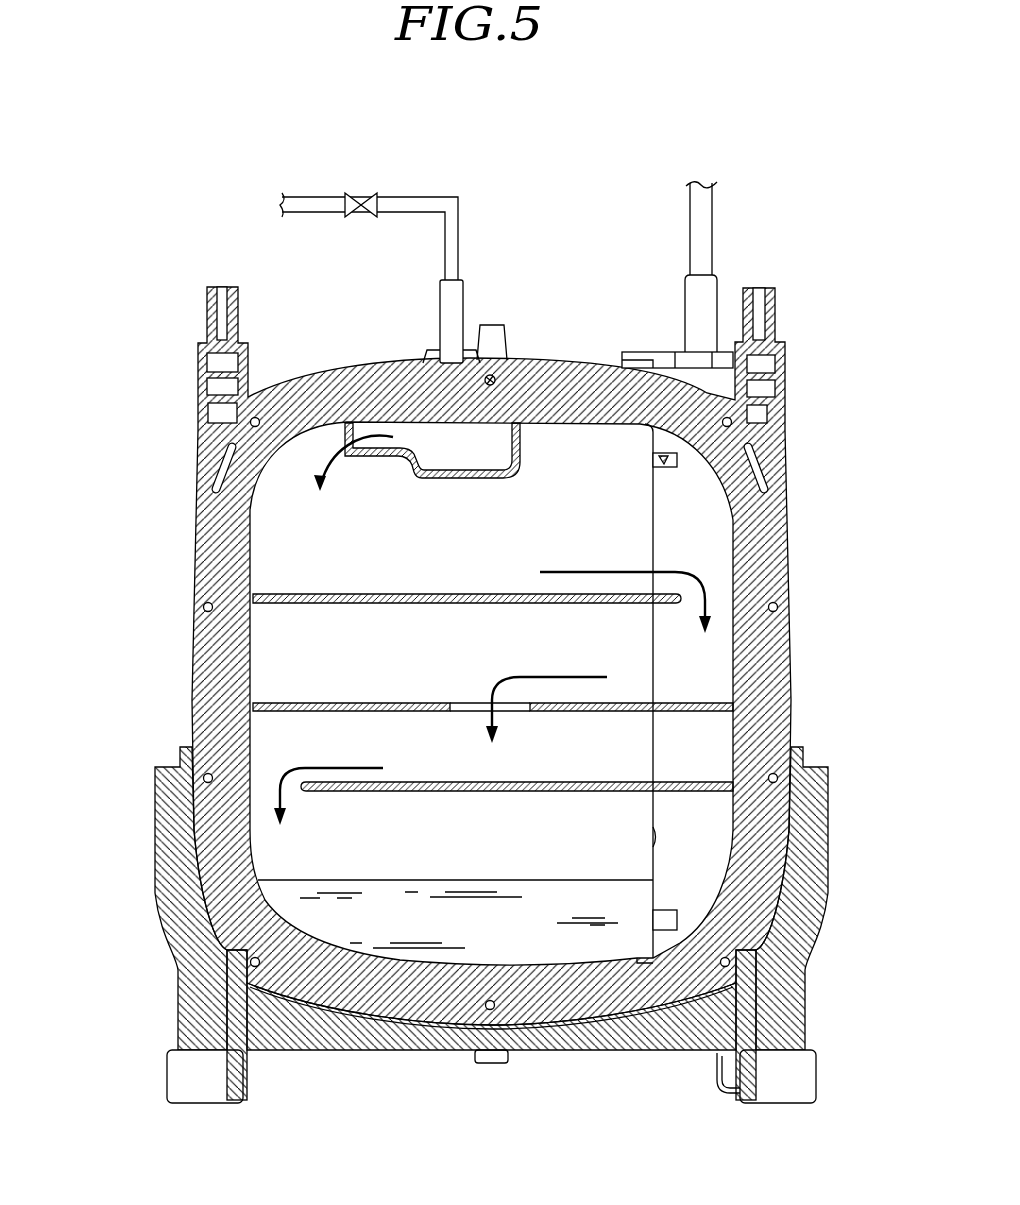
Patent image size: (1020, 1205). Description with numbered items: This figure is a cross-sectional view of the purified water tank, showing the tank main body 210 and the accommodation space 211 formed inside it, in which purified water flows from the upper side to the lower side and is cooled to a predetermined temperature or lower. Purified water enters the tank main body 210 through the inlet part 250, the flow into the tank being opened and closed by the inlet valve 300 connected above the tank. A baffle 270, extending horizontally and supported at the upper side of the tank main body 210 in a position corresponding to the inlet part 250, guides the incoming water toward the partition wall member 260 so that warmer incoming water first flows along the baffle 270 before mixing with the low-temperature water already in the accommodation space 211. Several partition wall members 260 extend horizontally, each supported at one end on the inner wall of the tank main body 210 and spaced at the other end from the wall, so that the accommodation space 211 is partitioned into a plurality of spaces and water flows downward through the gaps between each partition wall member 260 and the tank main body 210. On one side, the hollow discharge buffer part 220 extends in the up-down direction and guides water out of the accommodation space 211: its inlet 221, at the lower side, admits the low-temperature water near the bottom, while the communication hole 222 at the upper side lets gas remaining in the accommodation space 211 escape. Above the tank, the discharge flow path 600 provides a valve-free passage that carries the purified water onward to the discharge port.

The tank main body 210 is at (316, 364).
The accommodation space 211 is at (498, 657).
The discharge buffer part 220 is at (654, 550).
The inlet 221 is at (657, 924).
The communication hole 222 is at (657, 453).
The inlet part 250 is at (458, 298).
The partition wall member 260 is at (330, 785).
The baffle 270 is at (437, 472).
The inlet valve 300 is at (358, 192).
The discharge flow path 600 is at (706, 218).